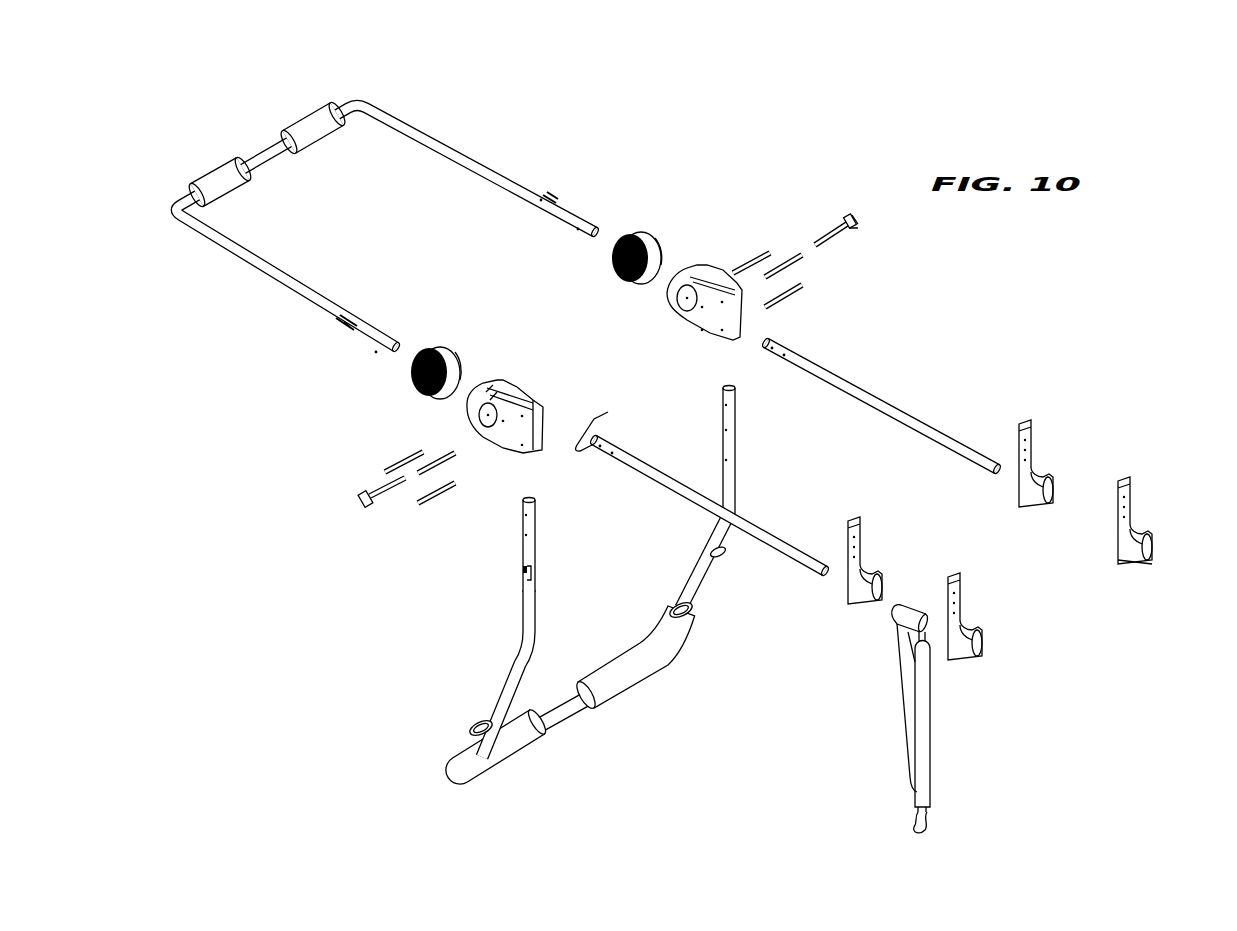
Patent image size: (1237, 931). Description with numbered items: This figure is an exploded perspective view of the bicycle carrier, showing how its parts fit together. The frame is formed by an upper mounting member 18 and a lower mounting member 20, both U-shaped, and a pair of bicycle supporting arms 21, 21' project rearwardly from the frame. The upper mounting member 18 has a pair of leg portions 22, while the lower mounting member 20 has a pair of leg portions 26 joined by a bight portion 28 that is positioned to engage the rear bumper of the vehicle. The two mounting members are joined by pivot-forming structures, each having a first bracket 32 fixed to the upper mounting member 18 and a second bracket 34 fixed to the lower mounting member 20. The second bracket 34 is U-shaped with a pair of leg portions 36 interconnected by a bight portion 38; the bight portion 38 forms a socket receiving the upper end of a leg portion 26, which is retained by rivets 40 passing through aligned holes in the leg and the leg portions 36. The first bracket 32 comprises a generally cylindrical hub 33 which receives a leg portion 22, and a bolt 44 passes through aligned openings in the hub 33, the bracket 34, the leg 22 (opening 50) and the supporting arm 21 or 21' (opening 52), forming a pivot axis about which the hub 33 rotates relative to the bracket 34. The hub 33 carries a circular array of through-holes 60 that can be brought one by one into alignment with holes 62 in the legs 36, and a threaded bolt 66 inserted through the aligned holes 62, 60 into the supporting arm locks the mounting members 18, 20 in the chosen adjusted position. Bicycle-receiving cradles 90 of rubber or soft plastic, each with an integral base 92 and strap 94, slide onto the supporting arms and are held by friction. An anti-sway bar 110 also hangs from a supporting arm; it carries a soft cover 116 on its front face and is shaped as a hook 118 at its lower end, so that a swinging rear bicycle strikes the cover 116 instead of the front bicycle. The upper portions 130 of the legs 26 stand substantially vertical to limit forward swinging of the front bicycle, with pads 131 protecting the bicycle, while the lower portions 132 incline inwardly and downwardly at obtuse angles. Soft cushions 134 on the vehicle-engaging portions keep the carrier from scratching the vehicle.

The upper mounting member 18 is at (387, 246).
The lower mounting member 20 is at (615, 572).
The bicycle supporting arm 21 is at (709, 496).
The bicycle supporting arm 21' is at (881, 405).
The leg portion 22 is at (498, 173).
The leg portion 26 is at (530, 653).
The bight portion 28 is at (567, 710).
The first bracket 32 is at (435, 343).
The hub 33 is at (457, 357).
The second bracket 34 is at (537, 397).
The leg portion 36 is at (510, 380).
The bight portion 38 is at (543, 423).
The rivet 40 is at (458, 456).
The bolt 44 is at (402, 457).
The opening 50 is at (578, 232).
The opening 52 is at (601, 422).
The through-hole 60 is at (637, 280).
The aligned hole 62 is at (503, 427).
The threaded bolt 66 is at (367, 516).
The bicycle-receiving cradle 90 is at (1043, 463).
The base 92 is at (1130, 560).
The strap 94 is at (1132, 487).
The anti-sway bar 110 is at (923, 719).
The cover 116 is at (928, 755).
The hook 118 is at (927, 824).
The upper portion 130 is at (536, 550).
The pad 131 is at (724, 455).
The lower portion 132 is at (500, 697).
The soft cushion 134 is at (317, 110).